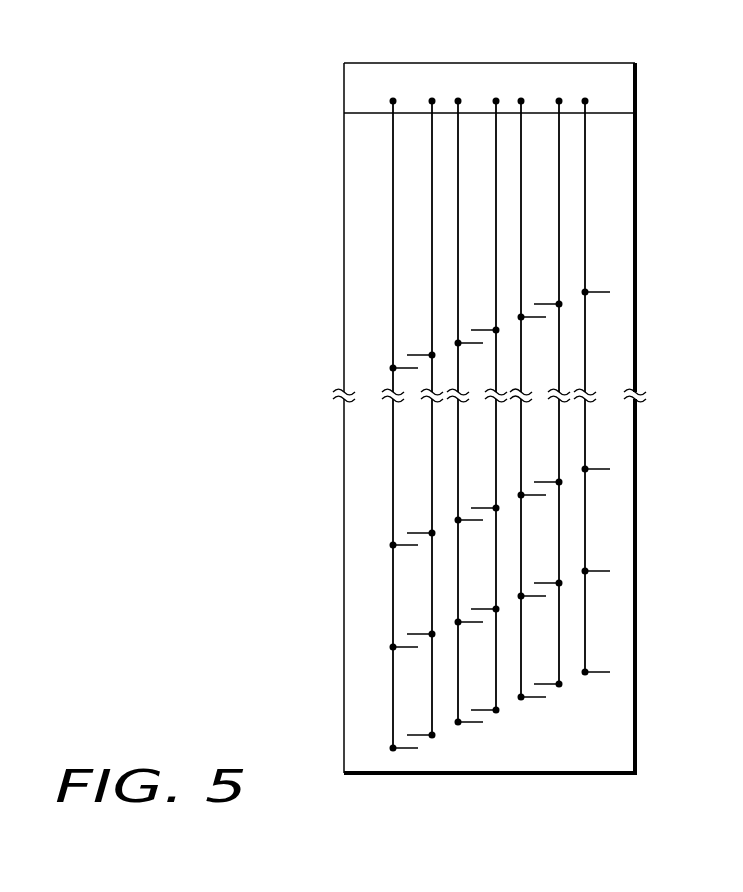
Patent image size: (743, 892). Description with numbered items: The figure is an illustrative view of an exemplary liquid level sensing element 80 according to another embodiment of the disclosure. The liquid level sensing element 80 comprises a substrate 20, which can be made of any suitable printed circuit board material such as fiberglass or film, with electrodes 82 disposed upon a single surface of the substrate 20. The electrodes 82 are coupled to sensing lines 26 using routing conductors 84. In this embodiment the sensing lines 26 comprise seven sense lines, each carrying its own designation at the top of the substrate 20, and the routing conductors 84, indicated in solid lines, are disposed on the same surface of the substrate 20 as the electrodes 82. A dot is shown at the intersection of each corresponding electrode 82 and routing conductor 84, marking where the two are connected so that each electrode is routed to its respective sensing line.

The substrate 20 is at (344, 587).
The sensing lines 26 is at (388, 52).
The liquid level sensing element 80 is at (280, 128).
The electrodes 82 is at (534, 696).
The routing conductors 84 is at (458, 266).